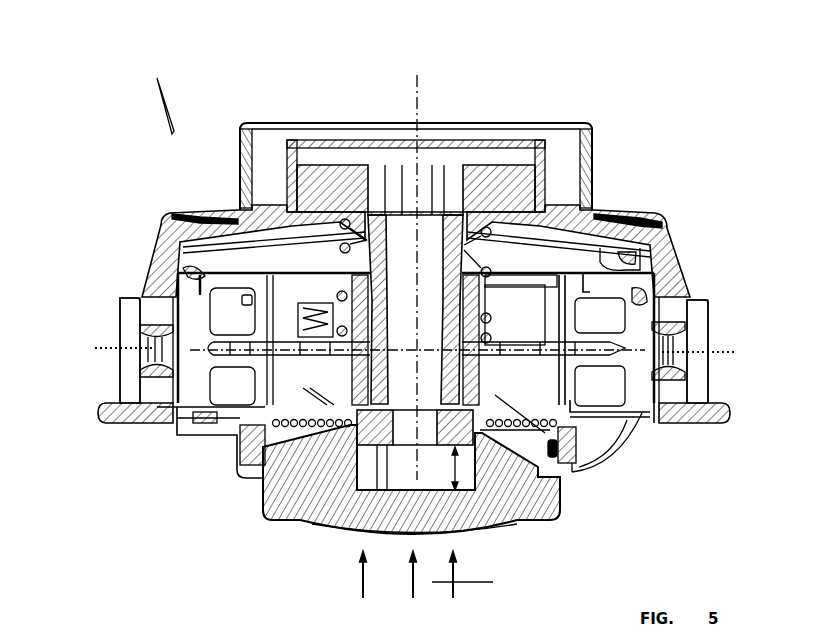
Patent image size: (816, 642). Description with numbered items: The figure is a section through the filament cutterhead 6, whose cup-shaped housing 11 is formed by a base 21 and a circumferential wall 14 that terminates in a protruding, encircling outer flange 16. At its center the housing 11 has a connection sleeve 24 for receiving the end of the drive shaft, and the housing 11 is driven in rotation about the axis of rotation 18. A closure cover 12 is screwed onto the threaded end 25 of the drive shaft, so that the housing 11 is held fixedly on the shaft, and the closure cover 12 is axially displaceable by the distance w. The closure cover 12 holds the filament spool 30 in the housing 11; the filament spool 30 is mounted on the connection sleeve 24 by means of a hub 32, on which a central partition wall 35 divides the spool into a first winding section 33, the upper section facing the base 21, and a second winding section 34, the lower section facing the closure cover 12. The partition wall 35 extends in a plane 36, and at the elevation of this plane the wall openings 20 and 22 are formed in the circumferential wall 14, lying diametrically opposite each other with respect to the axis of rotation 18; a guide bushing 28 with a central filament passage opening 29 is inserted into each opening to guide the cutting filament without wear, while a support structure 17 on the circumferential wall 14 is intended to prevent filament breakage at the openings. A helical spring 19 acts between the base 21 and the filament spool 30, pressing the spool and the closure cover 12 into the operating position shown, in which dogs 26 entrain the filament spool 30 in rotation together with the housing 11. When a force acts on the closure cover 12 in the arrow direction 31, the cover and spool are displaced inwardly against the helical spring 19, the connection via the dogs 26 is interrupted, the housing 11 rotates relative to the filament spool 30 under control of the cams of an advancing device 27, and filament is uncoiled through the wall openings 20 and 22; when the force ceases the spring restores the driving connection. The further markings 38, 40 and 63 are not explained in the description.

The filament cutterhead 6 is at (202, 170).
The housing 11 is at (230, 213).
The closure cover 12 is at (540, 507).
The circumferential wall 14 is at (163, 300).
The outer flange 16 is at (712, 418).
The support structure 17 is at (133, 322).
The axis of rotation 18 is at (413, 87).
The helical spring 19 is at (501, 291).
The wall opening 20 is at (699, 375).
The base 21 is at (348, 185).
The wall opening 22 is at (122, 360).
The connection sleeve 24 is at (448, 282).
The threaded end 25 is at (405, 430).
The dogs 26 is at (188, 274).
The advancing device 27 is at (630, 257).
The guide bushing 28 is at (145, 363).
The filament passage opening 29 is at (160, 348).
The filament spool 30 is at (483, 314).
The arrow direction 31 is at (476, 574).
The hub 32 is at (508, 302).
The first winding section 33 is at (595, 312).
The second winding section 34 is at (593, 390).
The partition wall 35 is at (598, 420).
The plane 36 is at (247, 349).
The inlet 38 is at (422, 595).
The inlet 40 is at (470, 599).
The inlet 63 is at (356, 596).